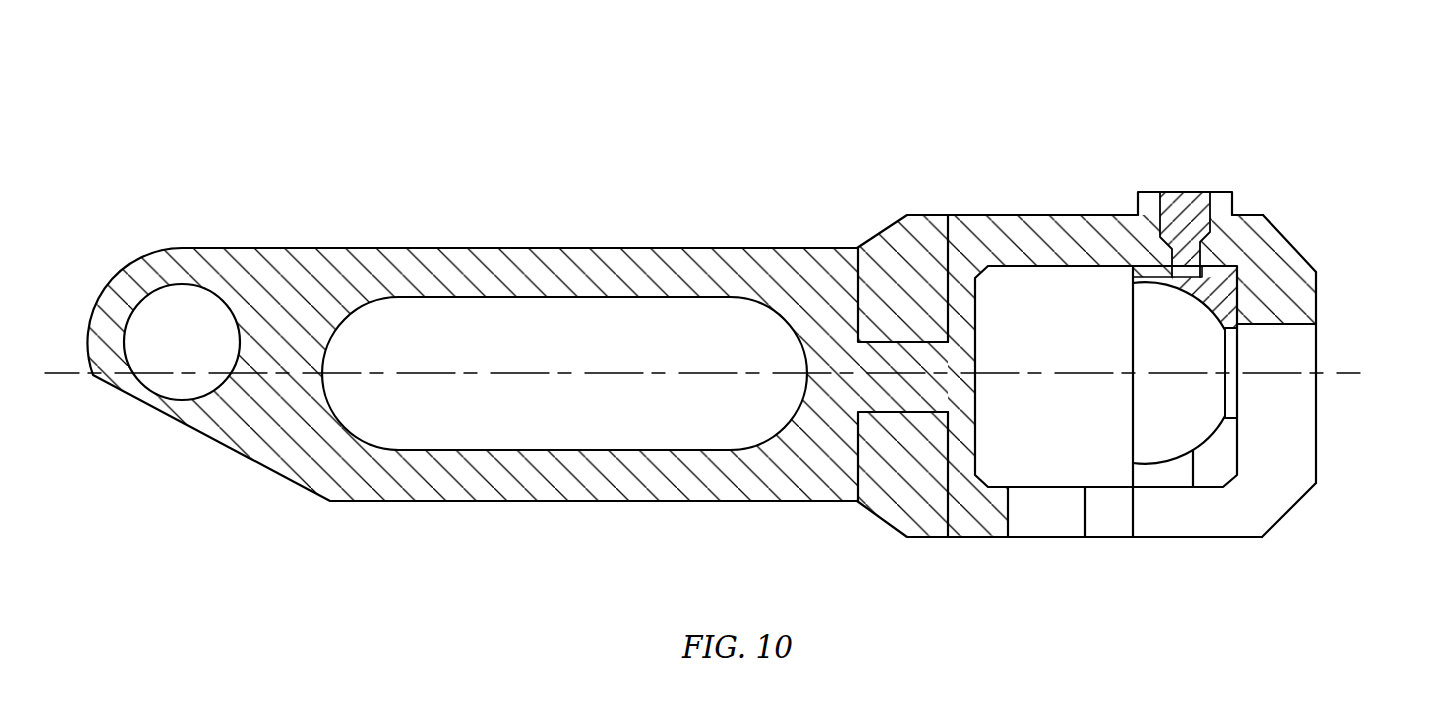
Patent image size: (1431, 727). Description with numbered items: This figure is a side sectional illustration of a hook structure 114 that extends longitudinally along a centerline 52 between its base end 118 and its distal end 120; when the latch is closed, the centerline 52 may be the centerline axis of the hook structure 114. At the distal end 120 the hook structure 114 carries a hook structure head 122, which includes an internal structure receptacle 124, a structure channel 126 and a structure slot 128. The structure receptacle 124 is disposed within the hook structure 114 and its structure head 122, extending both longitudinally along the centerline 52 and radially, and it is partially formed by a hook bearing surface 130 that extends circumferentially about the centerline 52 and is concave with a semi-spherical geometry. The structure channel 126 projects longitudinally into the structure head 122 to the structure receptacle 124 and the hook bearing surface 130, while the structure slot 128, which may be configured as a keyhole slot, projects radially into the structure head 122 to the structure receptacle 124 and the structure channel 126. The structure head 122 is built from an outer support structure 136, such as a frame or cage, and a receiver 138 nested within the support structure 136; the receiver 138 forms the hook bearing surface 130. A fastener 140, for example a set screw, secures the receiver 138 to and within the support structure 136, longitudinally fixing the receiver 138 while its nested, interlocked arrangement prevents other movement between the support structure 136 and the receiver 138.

The longitudinal centerline 52 is at (50, 375).
The hook structure 114 is at (1245, 110).
The base end 118 is at (86, 343).
The distal end 120 is at (1317, 303).
The hook structure head 122 is at (1283, 218).
The internal structure receptacle 124 is at (1077, 357).
The structure channel 126 is at (1296, 355).
The structure slot 128 is at (1071, 529).
The hook bearing surface 130 is at (1165, 283).
The outer support structure 136 is at (1073, 237).
The receiver 138 is at (1230, 263).
The fastener 140 is at (1192, 205).